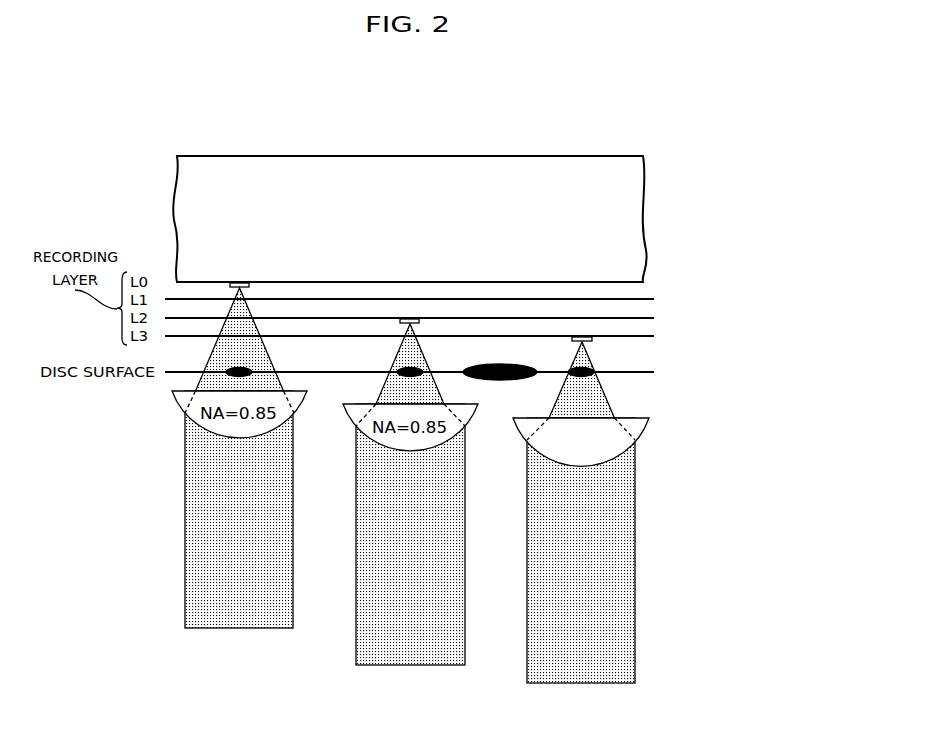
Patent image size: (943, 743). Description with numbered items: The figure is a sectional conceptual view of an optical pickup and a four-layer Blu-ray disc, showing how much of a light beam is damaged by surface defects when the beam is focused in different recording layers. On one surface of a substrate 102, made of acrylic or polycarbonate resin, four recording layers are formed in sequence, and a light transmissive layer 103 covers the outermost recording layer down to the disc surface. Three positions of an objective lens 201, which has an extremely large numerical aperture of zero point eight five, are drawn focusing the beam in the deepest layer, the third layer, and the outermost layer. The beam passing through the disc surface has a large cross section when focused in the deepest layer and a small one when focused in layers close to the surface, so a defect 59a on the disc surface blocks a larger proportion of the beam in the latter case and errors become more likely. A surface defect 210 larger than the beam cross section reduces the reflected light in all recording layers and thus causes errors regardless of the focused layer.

The substrate 102 is at (622, 168).
The light transmissive layer 103 is at (667, 353).
The surface defect 210 is at (505, 364).
The defect 59a is at (583, 378).
The objective lens 201 is at (640, 430).